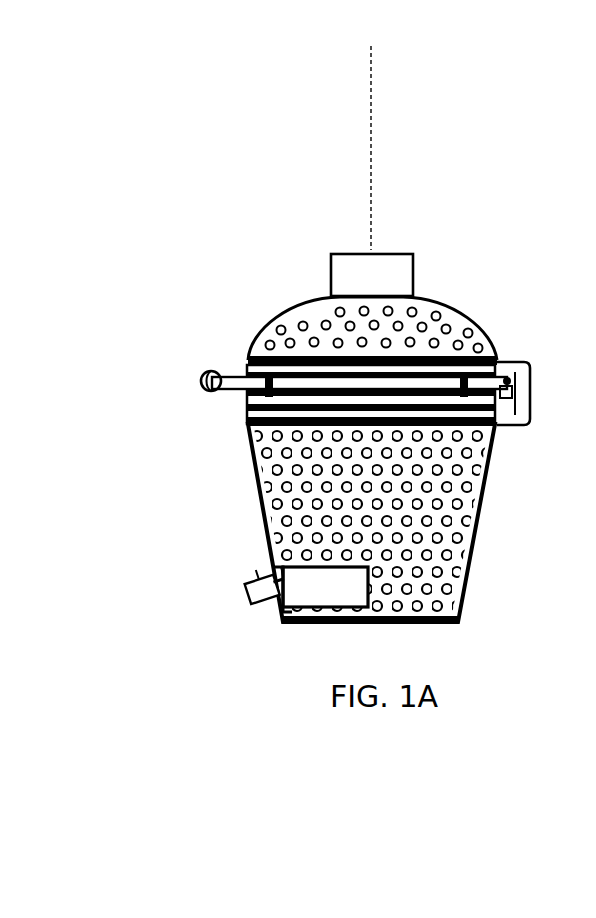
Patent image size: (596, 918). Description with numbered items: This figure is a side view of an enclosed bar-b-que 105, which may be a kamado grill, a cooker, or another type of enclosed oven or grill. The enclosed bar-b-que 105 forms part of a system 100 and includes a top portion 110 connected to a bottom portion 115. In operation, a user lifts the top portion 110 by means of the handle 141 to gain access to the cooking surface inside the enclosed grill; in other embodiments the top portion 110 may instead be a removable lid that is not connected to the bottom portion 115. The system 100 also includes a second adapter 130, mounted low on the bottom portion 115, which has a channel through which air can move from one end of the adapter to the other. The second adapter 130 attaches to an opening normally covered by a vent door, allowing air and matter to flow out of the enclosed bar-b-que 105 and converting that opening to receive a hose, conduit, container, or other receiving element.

The system 100 is at (108, 192).
The top portion 110 is at (283, 312).
The handle 141 is at (203, 375).
The enclosed bar-b-que 105 is at (227, 503).
The bottom portion 115 is at (477, 540).
The second adapter 130 is at (259, 606).